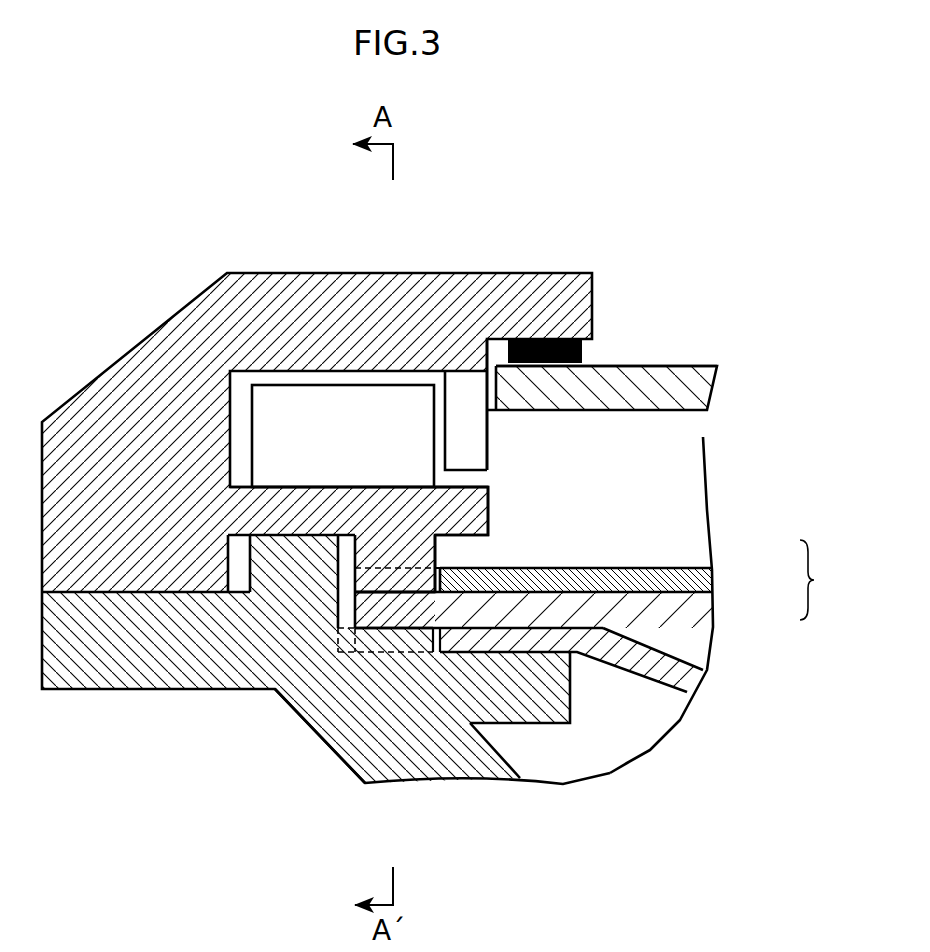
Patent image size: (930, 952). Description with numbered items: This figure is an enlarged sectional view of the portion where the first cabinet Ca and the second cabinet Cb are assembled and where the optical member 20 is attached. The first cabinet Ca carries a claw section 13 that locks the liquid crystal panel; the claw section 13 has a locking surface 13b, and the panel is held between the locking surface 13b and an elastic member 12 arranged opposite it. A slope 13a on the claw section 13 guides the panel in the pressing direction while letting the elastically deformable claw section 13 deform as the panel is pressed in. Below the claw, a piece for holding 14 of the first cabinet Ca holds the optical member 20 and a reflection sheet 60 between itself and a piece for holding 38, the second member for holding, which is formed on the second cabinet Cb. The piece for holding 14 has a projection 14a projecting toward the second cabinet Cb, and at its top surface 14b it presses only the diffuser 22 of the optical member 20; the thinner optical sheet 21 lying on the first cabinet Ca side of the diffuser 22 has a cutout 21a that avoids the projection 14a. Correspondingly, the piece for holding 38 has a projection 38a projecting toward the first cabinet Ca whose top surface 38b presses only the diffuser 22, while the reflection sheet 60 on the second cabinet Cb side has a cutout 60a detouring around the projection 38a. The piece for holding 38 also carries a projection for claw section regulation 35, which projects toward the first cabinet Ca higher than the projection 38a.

The first cabinet Ca is at (145, 340).
The second cabinet Cb is at (97, 690).
The elastic member 12 is at (583, 355).
The claw section 13 is at (480, 450).
The slope 13a is at (488, 462).
The locking surface 13b is at (510, 403).
The piece for holding 14 is at (383, 500).
The projection 14a is at (410, 552).
The top surface 14b is at (377, 598).
The optical member 20 is at (601, 581).
The optical sheet 21 is at (715, 573).
The cutout 21a is at (435, 583).
The diffuser 22 is at (703, 615).
The projection for claw section regulation 35 is at (337, 405).
The piece for holding 38 is at (547, 685).
The projection 38a is at (370, 638).
The top surface 38b is at (410, 627).
The reflection sheet 60 is at (643, 677).
The cutout 60a is at (432, 638).